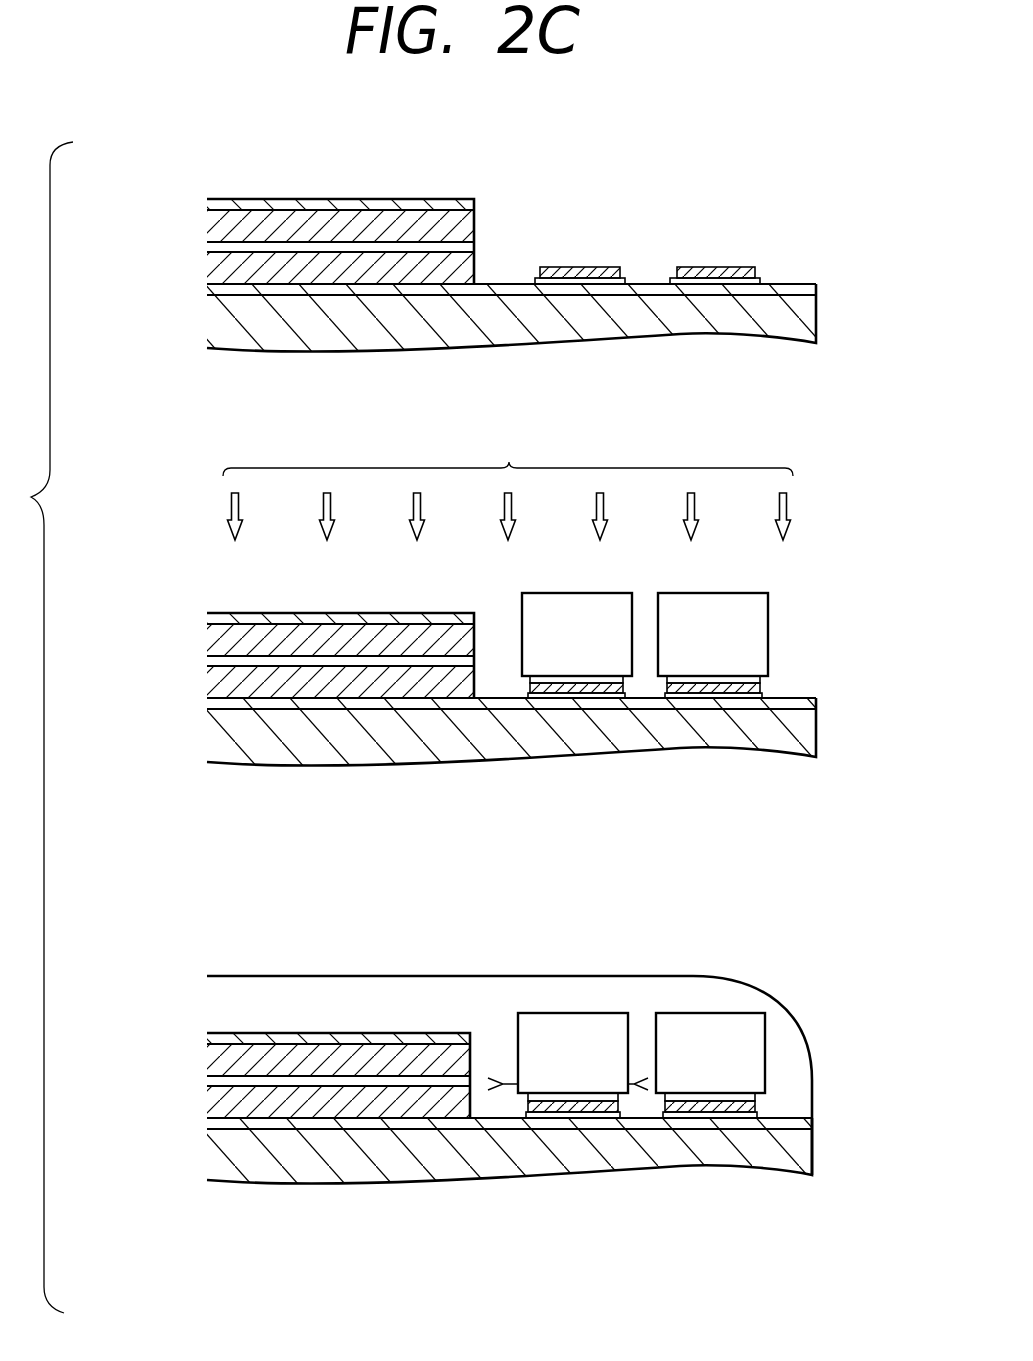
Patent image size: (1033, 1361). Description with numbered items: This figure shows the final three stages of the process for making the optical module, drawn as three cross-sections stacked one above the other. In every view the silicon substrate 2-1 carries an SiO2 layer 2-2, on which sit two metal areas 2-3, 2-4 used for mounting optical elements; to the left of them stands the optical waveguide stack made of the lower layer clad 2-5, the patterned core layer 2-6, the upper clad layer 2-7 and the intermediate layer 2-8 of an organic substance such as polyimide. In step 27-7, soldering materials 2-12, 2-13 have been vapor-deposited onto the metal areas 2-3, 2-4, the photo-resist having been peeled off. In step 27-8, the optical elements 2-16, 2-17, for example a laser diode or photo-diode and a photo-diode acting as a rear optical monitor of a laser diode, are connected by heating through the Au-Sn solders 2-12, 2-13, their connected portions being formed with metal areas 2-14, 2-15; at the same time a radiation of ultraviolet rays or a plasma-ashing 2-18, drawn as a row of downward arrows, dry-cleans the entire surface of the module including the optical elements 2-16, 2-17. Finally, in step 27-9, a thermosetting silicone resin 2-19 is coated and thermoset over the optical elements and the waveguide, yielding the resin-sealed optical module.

The silicon substrate 2-1 is at (800, 318).
The SiO2 layer 2-2 is at (792, 290).
The metal area 2-3 is at (598, 281).
The metal area 2-4 is at (736, 281).
The lower layer clad 2-5 is at (237, 268).
The core layer 2-6 is at (305, 249).
The upper clad layer 2-7 is at (370, 214).
The intermediate layer 2-8 is at (435, 205).
The soldering material 2-12 is at (564, 272).
The soldering material 2-13 is at (701, 272).
The metal area 2-14 is at (542, 680).
The metal area 2-15 is at (686, 680).
The optical element 2-16 is at (594, 603).
The optical element 2-17 is at (733, 603).
The ultraviolet-ray radiation or plasma-ashing 2-18 is at (508, 485).
The thermosetting silicone resin 2-19 is at (254, 990).
The step 27-7 is at (132, 249).
The step 27-8 is at (130, 664).
The step 27-9 is at (127, 1084).